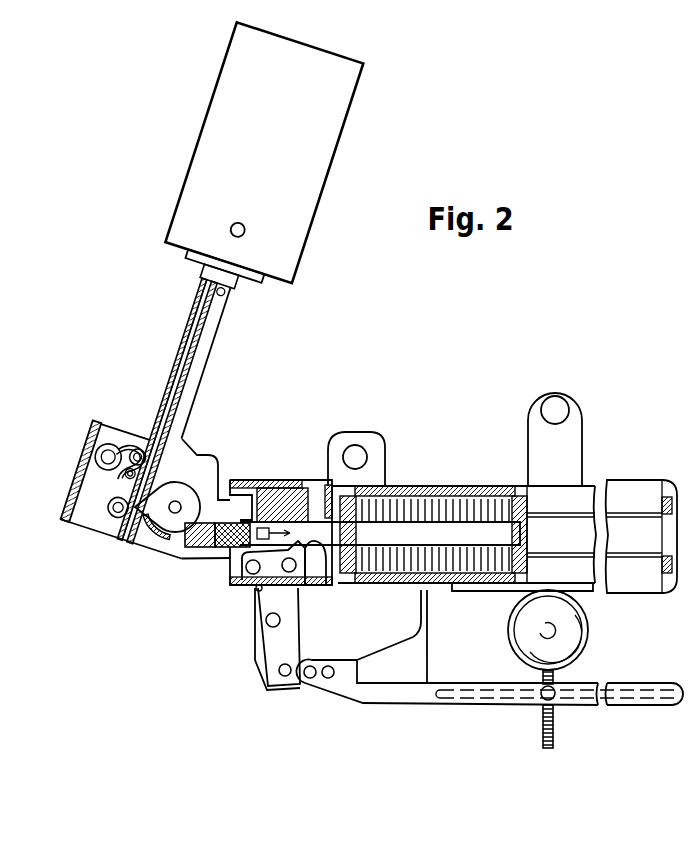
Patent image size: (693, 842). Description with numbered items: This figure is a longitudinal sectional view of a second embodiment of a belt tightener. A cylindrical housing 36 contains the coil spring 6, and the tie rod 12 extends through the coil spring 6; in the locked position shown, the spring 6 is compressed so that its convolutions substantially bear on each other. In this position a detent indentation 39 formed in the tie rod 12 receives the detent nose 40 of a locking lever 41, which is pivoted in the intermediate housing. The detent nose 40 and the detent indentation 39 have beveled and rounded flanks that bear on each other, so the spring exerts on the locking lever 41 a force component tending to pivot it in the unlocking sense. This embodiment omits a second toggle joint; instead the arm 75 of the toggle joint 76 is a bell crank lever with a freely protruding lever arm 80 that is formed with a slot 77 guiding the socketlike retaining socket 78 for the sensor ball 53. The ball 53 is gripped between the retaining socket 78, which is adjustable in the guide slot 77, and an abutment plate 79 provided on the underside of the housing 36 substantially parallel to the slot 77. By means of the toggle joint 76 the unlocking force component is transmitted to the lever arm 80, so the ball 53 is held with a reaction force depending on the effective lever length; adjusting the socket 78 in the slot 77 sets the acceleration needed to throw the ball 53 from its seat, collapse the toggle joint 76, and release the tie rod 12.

The coil spring 6 is at (465, 505).
The tie rod 12 is at (437, 530).
The cylindrical housing 36 is at (507, 486).
The detent indentation 39 is at (318, 540).
The detent nose 40 is at (310, 588).
The locking lever 41 is at (258, 590).
The sensor ball 53 is at (586, 630).
The arm of the toggle joint 75 is at (290, 650).
The toggle joint 76 is at (256, 629).
The slot 77 is at (455, 690).
The retaining socket 78 is at (560, 676).
The abutment plate 79 is at (466, 592).
The lever arm 80 is at (410, 690).